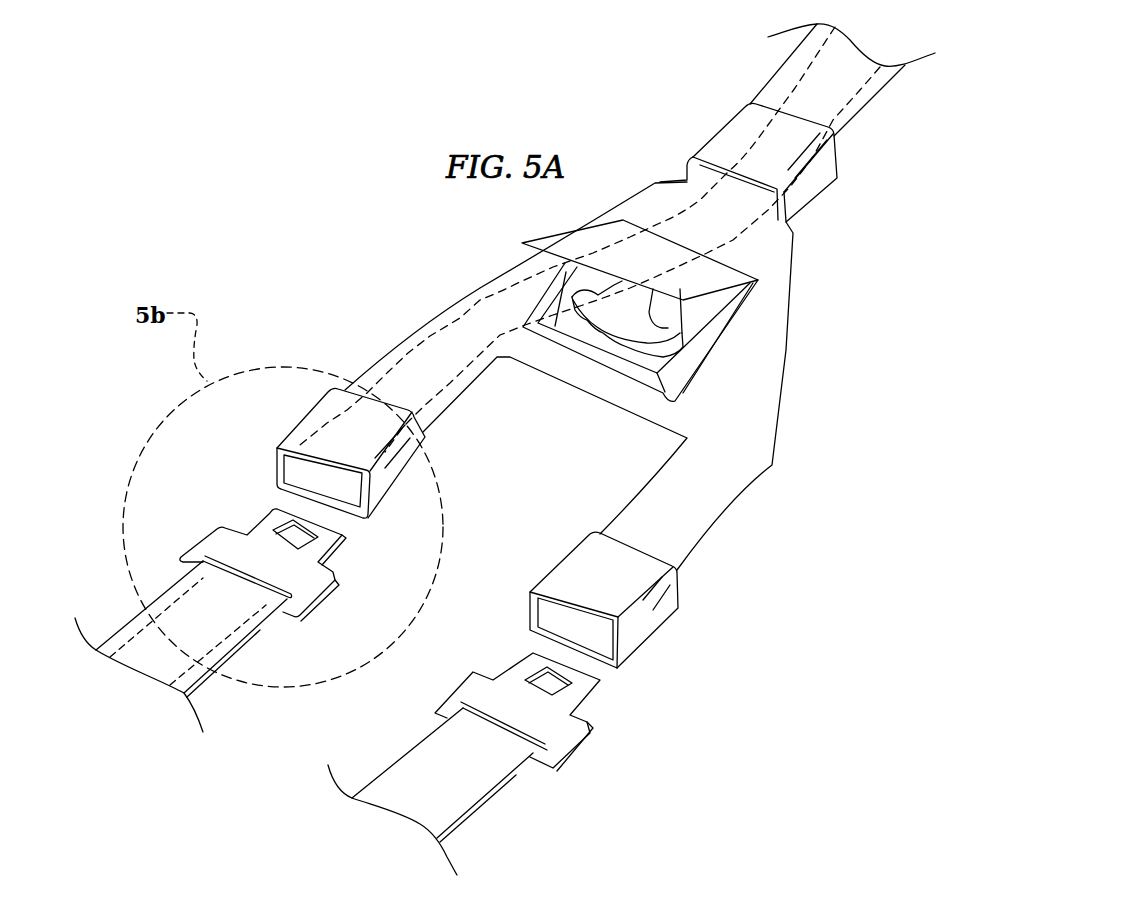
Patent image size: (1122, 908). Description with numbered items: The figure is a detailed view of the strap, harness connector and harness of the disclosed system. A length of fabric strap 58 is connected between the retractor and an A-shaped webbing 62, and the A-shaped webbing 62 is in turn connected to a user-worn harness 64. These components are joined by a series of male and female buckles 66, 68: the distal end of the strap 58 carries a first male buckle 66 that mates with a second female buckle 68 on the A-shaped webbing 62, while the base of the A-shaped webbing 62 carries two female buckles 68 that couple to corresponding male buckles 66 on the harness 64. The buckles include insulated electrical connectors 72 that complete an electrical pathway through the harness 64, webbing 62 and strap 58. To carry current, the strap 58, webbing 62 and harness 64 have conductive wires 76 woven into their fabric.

The strap 58 is at (868, 104).
The A-shaped webbing 62 is at (772, 362).
The harness 64 is at (192, 683).
The male buckle 66 is at (307, 597).
The female buckle 68 is at (408, 465).
The insulated electrical connector 72 is at (265, 527).
The conductive wires 76 is at (808, 63).